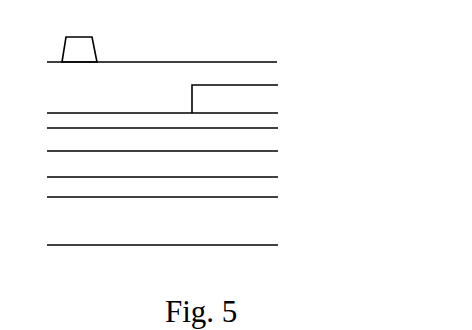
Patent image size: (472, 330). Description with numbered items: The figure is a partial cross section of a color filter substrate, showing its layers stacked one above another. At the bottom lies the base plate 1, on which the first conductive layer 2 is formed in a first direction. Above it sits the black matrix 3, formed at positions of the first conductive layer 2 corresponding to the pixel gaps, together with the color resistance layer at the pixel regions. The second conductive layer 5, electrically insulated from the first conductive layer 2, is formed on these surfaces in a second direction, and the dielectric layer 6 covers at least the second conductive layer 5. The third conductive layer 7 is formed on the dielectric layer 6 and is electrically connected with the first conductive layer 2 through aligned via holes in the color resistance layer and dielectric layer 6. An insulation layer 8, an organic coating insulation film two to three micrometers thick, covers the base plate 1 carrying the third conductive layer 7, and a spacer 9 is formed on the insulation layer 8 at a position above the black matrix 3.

The base plate 1 is at (265, 223).
The first conductive layer 2 is at (271, 187).
The black matrix 3 is at (204, 153).
The second conductive layer 5 is at (268, 142).
The dielectric layer 6 is at (266, 119).
The third conductive layer 7 is at (263, 99).
The insulation layer 8 is at (266, 72).
The spacer 9 is at (86, 53).